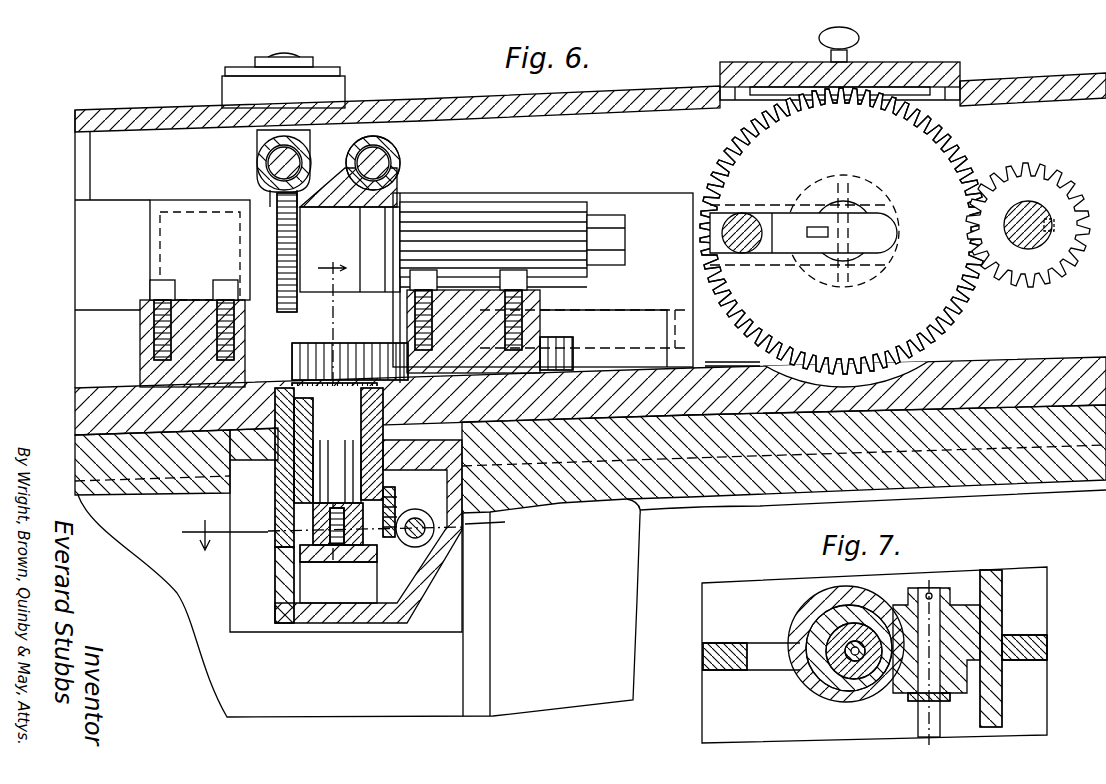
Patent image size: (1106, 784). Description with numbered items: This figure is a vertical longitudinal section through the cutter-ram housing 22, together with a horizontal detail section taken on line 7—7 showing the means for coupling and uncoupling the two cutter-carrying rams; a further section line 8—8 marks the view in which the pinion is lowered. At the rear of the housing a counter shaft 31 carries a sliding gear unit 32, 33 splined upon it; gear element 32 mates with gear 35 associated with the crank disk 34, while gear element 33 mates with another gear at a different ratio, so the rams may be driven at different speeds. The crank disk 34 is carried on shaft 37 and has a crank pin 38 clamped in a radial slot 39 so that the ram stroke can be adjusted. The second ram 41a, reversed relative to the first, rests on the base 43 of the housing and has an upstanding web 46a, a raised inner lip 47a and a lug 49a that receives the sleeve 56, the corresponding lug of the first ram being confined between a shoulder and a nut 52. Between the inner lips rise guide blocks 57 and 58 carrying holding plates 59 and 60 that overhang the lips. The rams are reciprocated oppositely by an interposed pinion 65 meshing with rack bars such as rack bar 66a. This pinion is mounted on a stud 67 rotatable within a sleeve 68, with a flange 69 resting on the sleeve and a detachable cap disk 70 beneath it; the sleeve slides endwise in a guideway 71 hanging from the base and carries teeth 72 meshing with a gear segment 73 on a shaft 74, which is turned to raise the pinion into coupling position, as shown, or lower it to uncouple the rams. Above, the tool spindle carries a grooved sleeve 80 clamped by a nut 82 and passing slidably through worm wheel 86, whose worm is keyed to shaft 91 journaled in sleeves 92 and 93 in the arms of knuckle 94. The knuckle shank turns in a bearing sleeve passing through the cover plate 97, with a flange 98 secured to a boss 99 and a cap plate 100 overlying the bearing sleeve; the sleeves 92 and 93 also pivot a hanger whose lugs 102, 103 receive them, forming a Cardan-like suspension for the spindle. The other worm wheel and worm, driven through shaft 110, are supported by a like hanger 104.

In FIG. 6, the section line 7 is at (347, 531).
In FIG. 6, the spindle / slide 8 is at (350, 383).
In FIG. 6, the housing 22 is at (428, 125).
In FIG. 6, the counter shaft 31 is at (1030, 222).
In FIG. 6, the gear element 32 is at (1030, 262).
In FIG. 6, the gear element 33 is at (1060, 274).
In FIG. 6, the crank disk 34 is at (948, 314).
In FIG. 6, the gear 35 is at (728, 154).
In FIG. 6, the shaft 37 is at (860, 235).
In FIG. 6, the crank pin 38 is at (745, 222).
In FIG. 6, the radial slot 39 is at (798, 260).
In FIG. 6, the second ram 41a is at (690, 345).
In FIG. 6, the base 43 is at (660, 400).
In FIG. 6, the upstanding web 46a is at (645, 210).
In FIG. 6, the raised inner lip 47a is at (624, 312).
In FIG. 6, the lug 49a is at (178, 228).
In FIG. 6, the nut 52 is at (242, 247).
In FIG. 6, the sleeve 56 is at (85, 235).
In FIG. 6, the guide block 57 is at (148, 352).
In FIG. 6, the guide block 58 is at (538, 330).
In FIG. 6, the holding plate 59 is at (138, 312).
In FIG. 6, the holding plate 60 is at (538, 300).
In FIG. 6, the pinion 65 is at (325, 362).
In FIG. 6, the rack bar 66a is at (575, 355).
In FIG. 6, the stud 67 is at (290, 468).
In FIG. 7, the stud 67 is at (847, 622).
In FIG. 6, the sleeve 68 is at (290, 498).
In FIG. 7, the sleeve 68 is at (820, 633).
In FIG. 6, the flange 69 is at (292, 390).
In FIG. 6, the cap disk 70 is at (312, 565).
In FIG. 6, the guideway 71 is at (280, 546).
In FIG. 7, the guideway 71 is at (815, 616).
In FIG. 6, the teeth 72 is at (385, 490).
In FIG. 6, the gear segment 73 is at (400, 499).
In FIG. 7, the gear segment 73 is at (905, 600).
In FIG. 6, the shaft 74 is at (413, 548).
In FIG. 7, the shaft 74 is at (925, 716).
In FIG. 6, the sleeve 80 is at (522, 210).
In FIG. 6, the nut 82 is at (600, 220).
In FIG. 6, the worm wheel 86 is at (298, 250).
In FIG. 6, the worm shaft 91 is at (258, 178).
In FIG. 6, the bearing sleeve 92 is at (387, 148).
In FIG. 6, the bearing sleeve 93 is at (268, 166).
In FIG. 6, the knuckle 94 is at (310, 140).
In FIG. 6, the cover plate 97 is at (115, 118).
In FIG. 6, the flange 98 is at (236, 70).
In FIG. 6, the boss 99 is at (228, 90).
In FIG. 6, the cap plate 100 is at (312, 60).
In FIG. 6, the pierced lug 102 is at (400, 160).
In FIG. 6, the pierced lug 103 is at (268, 186).
In FIG. 6, the hanger 104 is at (350, 208).
In FIG. 6, the worm shaft 110 is at (405, 167).